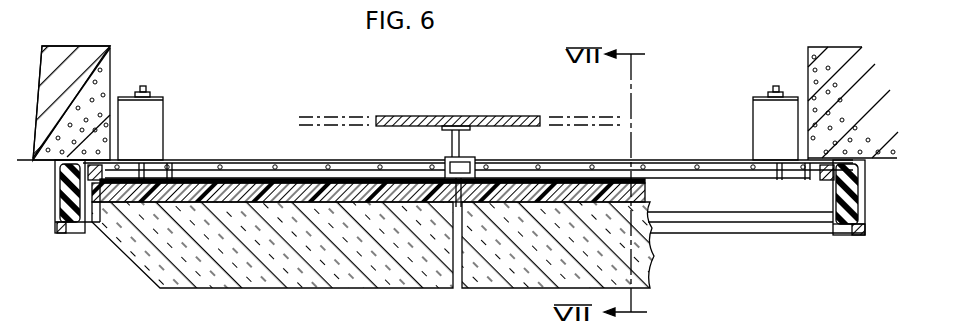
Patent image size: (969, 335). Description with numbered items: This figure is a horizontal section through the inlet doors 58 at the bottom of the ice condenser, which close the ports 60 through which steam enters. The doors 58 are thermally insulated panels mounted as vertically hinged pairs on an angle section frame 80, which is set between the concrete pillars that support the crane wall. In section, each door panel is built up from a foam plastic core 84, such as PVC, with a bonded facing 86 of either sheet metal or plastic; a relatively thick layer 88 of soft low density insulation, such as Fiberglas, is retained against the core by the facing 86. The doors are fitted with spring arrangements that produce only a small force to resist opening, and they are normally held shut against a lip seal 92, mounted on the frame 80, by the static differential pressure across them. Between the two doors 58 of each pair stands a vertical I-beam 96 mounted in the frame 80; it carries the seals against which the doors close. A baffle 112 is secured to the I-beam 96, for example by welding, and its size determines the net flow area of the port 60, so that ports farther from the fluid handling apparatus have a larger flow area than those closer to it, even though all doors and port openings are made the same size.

The inlet door 58 is at (262, 282).
The port 60 is at (685, 83).
The angle section frame 80 is at (55, 208).
The foam plastic core 84 is at (206, 178).
The bonded facing 86 is at (244, 182).
The layer of soft low density insulation 88 is at (363, 273).
The lip seal 92 is at (84, 174).
The vertical I-beam 96 is at (463, 141).
The baffle 112 is at (433, 114).